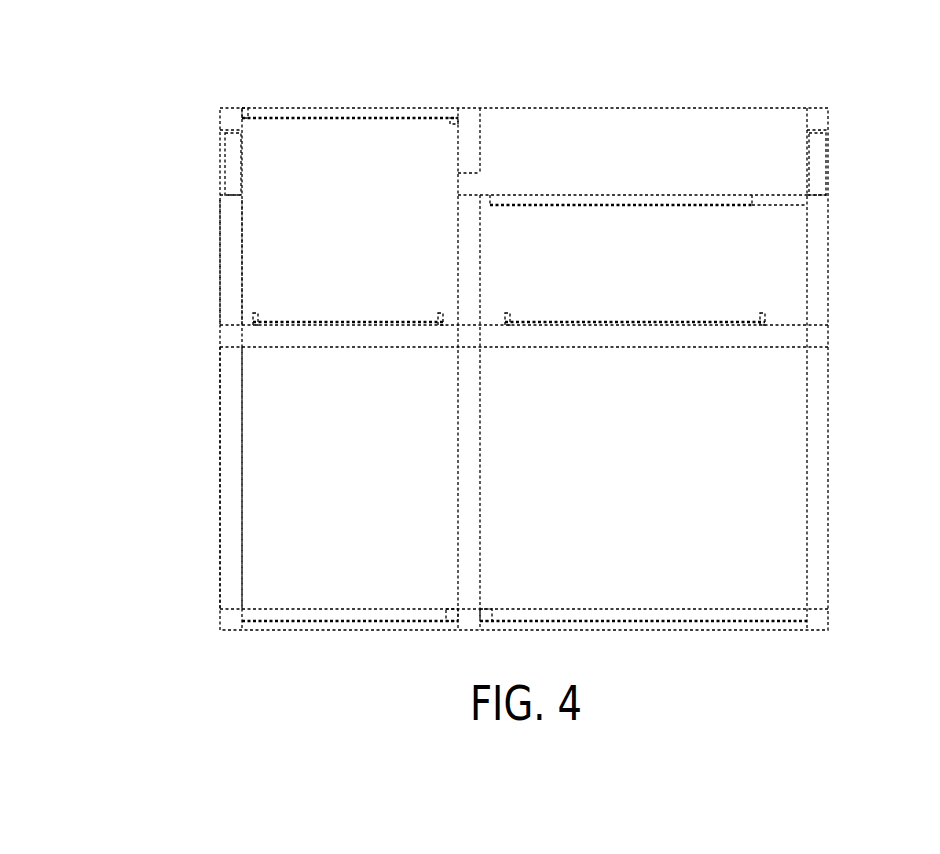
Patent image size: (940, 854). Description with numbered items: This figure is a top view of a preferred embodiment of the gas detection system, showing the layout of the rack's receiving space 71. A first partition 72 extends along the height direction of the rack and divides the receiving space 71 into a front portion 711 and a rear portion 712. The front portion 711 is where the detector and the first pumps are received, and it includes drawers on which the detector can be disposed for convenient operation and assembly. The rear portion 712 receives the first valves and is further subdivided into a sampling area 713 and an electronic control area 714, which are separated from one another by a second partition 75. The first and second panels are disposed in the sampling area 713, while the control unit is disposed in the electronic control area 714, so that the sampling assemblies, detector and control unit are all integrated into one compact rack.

The receiving space 71 is at (82, 306).
The front portion 711 is at (256, 399).
The rear portion 712 is at (243, 282).
The first partition 72 is at (785, 340).
The second partition 75 is at (469, 127).
The sampling area 713 is at (593, 222).
The electronic control area 714 is at (369, 131).